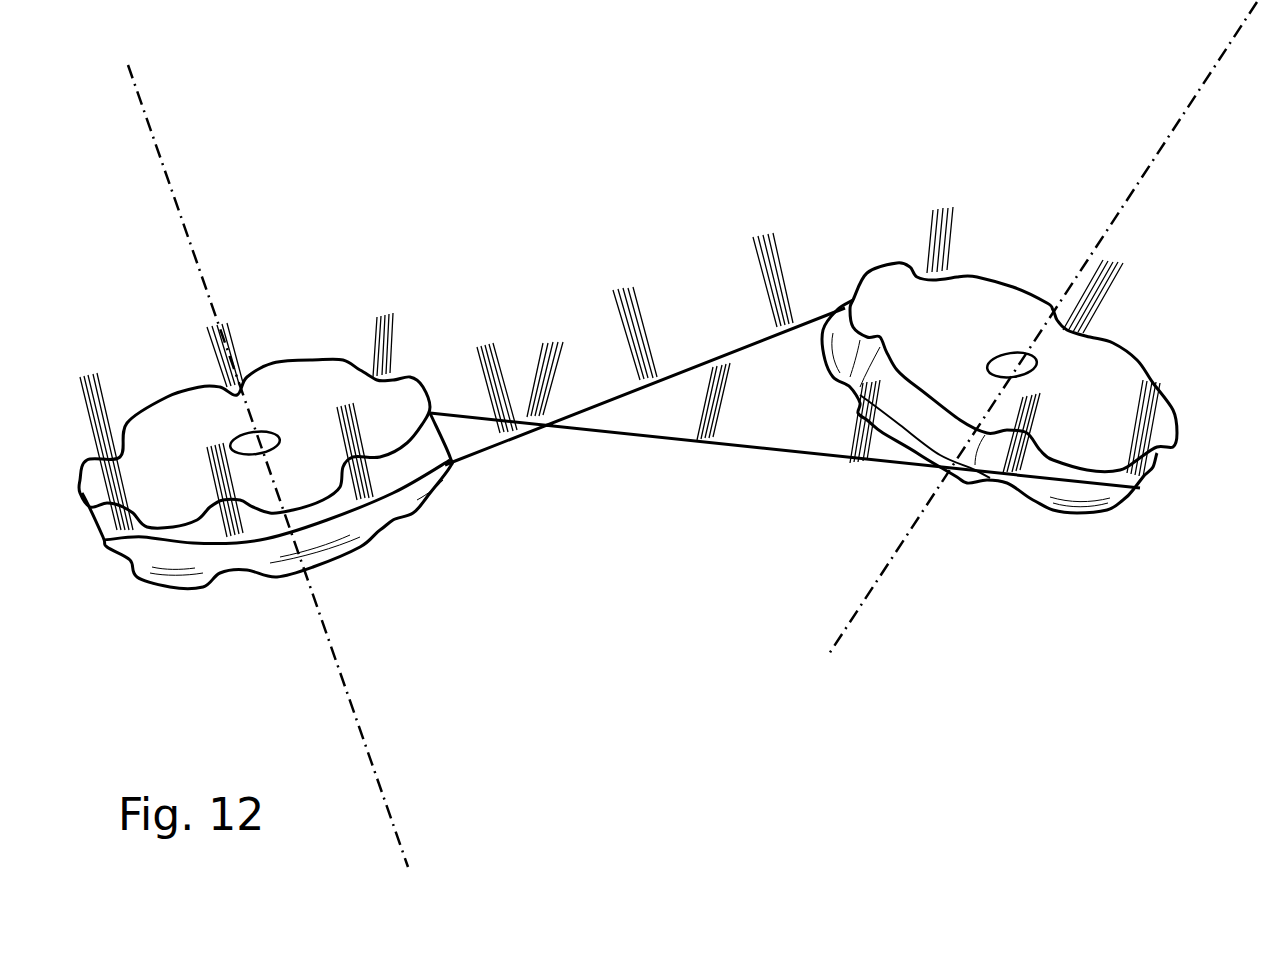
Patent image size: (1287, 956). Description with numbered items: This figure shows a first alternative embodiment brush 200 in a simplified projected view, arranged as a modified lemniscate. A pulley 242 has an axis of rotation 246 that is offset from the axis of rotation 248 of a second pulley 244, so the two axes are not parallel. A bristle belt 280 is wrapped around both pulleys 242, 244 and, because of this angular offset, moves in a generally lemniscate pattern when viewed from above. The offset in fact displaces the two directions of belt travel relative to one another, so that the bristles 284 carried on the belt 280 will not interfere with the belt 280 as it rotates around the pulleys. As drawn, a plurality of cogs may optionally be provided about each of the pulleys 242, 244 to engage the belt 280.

The brush assembly 200 is at (1000, 67).
The pulley 242 is at (277, 373).
The pulley 244 is at (1113, 357).
The axis of rotation 246 is at (168, 178).
The axis of rotation 248 is at (1158, 152).
The bristle belt 280 is at (620, 437).
The bristles 284 is at (395, 320).